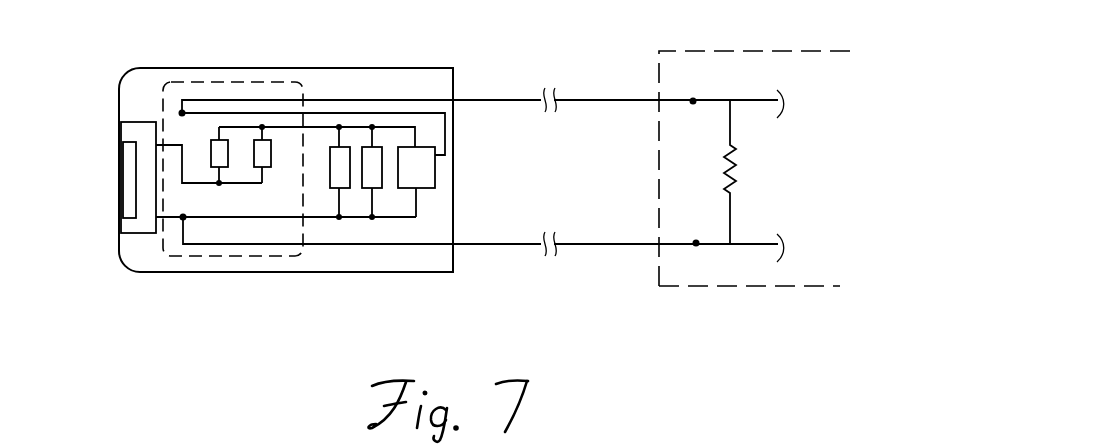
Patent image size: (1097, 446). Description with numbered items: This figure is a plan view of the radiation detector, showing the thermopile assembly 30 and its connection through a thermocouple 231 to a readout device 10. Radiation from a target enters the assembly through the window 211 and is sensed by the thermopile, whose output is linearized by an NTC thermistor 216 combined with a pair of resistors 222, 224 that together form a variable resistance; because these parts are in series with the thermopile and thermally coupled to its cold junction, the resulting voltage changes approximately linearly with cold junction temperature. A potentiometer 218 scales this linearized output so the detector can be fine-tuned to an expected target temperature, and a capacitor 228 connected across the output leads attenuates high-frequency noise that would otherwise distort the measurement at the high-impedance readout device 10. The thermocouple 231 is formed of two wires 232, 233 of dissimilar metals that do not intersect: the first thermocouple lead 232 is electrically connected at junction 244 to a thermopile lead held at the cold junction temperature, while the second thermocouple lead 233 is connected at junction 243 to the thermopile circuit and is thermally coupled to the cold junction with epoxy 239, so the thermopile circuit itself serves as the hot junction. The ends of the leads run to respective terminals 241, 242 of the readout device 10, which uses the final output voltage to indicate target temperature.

The readout device 10 is at (668, 51).
The thermopile assembly 30 is at (137, 233).
The window 211 is at (125, 197).
The NTC thermistor 216 is at (270, 138).
The potentiometer 218 is at (428, 172).
The resistor R1 222 is at (215, 138).
The resistor R2 224 is at (343, 182).
The capacitor 228 is at (377, 178).
The thermocouple 231 is at (626, 100).
The first thermocouple lead 232 is at (275, 244).
The second thermocouple lead 233 is at (383, 100).
The epoxy 239 is at (182, 80).
The terminal 241 is at (693, 100).
The terminal 242 is at (696, 244).
The junction 243 is at (182, 112).
The junction 244 is at (193, 205).